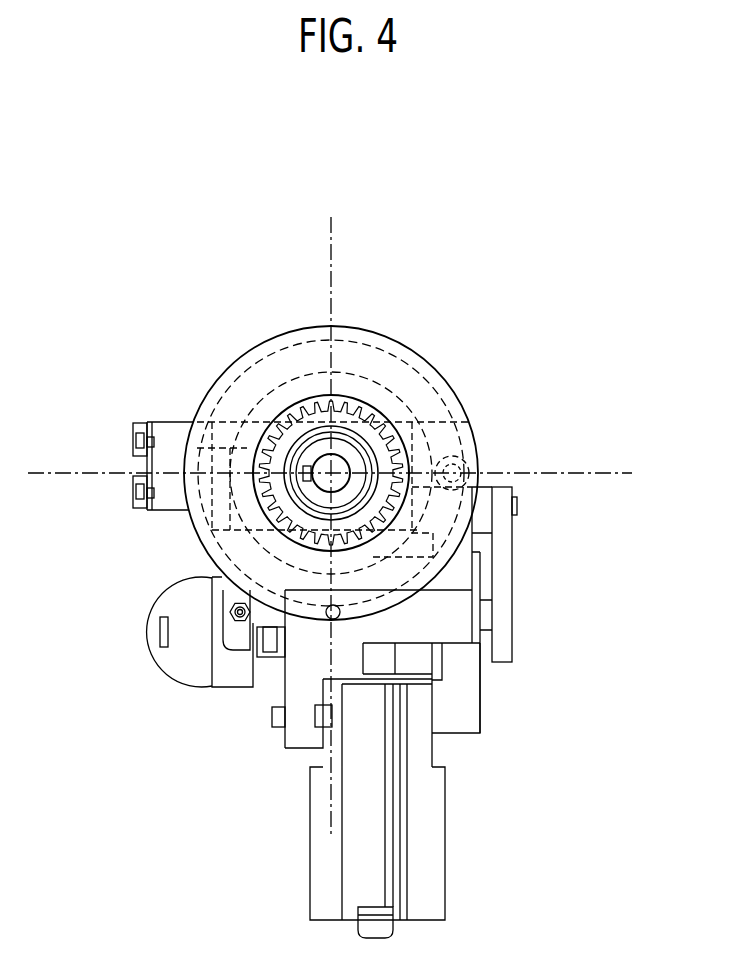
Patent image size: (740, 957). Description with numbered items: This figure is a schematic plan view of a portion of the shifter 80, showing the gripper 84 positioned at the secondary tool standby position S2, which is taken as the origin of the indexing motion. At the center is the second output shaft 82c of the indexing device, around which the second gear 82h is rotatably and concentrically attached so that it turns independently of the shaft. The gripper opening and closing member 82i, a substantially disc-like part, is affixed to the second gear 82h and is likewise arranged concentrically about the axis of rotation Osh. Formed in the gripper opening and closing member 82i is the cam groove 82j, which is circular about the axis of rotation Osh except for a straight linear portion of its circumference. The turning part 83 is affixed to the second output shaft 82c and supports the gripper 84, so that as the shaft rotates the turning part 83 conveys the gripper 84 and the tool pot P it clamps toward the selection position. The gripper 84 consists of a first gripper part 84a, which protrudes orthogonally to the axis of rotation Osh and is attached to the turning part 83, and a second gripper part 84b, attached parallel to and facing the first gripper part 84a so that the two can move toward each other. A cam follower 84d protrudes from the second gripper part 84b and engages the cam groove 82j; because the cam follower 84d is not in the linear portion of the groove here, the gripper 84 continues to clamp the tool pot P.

The shifter 80 is at (361, 606).
The gripper opening and closing member 82i is at (398, 353).
The cam groove 82j is at (252, 376).
The axis of rotation Osh is at (316, 400).
The second gear 82h is at (402, 447).
The second output shaft 82c is at (343, 453).
The cam follower 84d is at (455, 494).
The turning part 83 is at (190, 660).
The gripper 84 is at (411, 764).
The first gripper part 84a is at (302, 738).
The second gripper part 84b is at (458, 720).
The tool pot P is at (432, 862).
The secondary tool standby position S2 is at (572, 893).